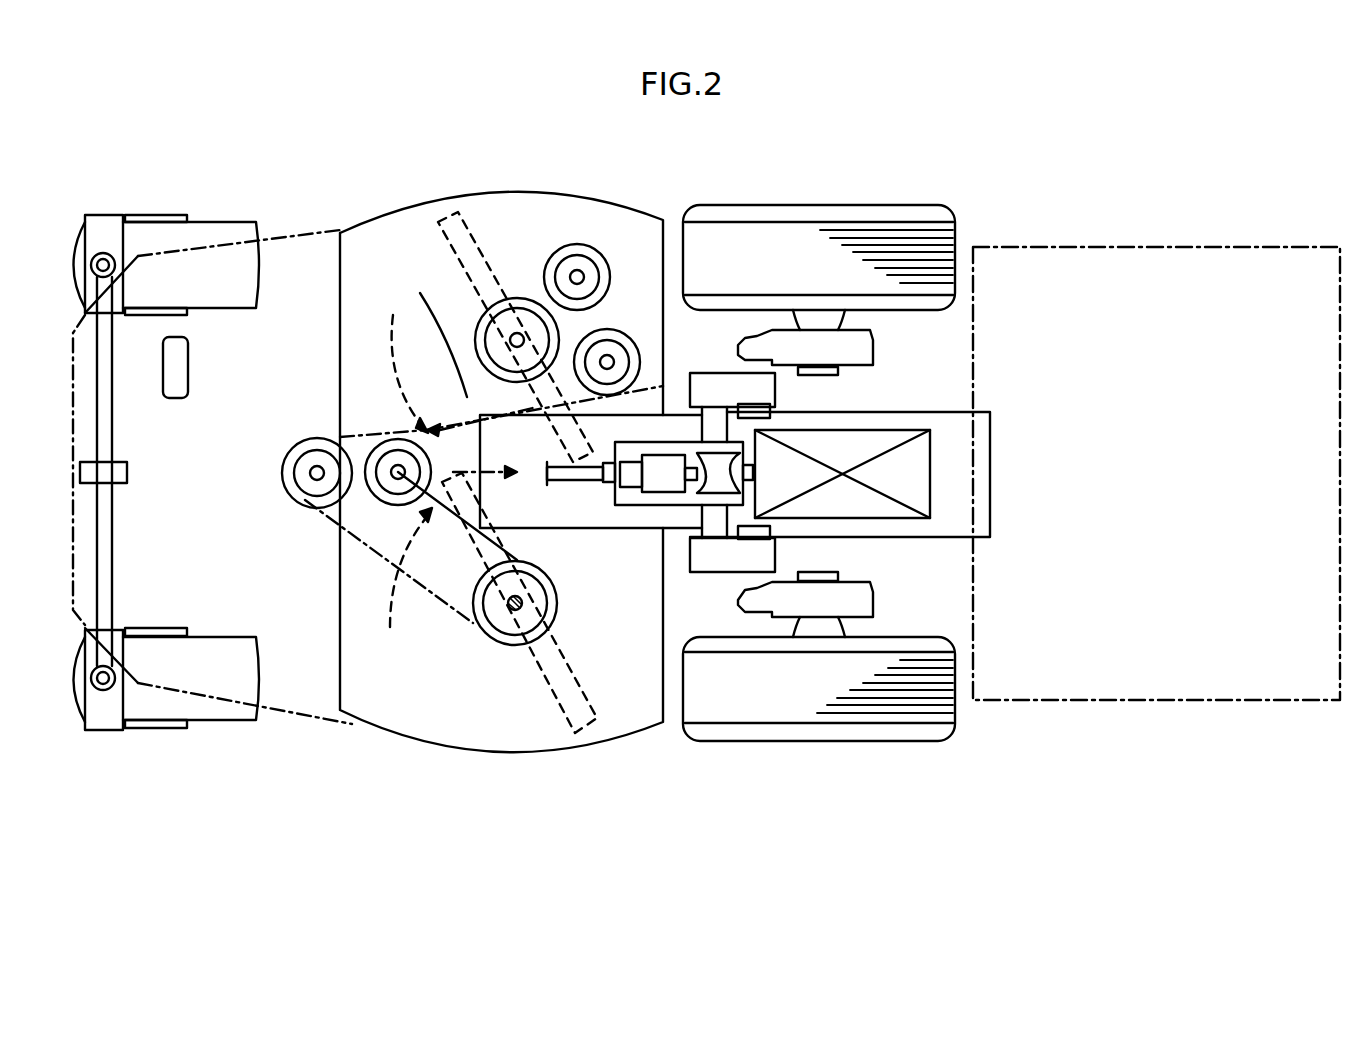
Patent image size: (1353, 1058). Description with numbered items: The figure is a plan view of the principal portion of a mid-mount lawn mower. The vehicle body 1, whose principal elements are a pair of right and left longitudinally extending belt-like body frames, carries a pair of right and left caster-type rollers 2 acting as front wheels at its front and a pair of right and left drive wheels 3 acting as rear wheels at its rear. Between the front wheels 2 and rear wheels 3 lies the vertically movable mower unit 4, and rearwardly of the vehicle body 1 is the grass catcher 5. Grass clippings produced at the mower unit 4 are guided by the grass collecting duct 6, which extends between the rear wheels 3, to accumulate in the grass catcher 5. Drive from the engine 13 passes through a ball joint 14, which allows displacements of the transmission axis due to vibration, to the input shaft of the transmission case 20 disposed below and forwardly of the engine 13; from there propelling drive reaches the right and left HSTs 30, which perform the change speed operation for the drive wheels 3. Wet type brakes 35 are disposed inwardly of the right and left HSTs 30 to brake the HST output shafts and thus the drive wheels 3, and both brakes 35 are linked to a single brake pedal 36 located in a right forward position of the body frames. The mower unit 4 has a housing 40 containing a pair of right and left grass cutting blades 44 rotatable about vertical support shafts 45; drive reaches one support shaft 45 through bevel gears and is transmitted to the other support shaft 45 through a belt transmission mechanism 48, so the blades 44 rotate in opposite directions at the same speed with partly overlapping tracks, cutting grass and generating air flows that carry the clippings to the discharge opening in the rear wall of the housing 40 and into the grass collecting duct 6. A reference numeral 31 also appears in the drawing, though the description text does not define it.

The vehicle body 1 is at (296, 716).
The caster-type rollers 2 is at (210, 220).
The drive wheels 3 is at (812, 215).
The mower unit 4 is at (501, 536).
The grass catcher 5 is at (1160, 255).
The grass collecting duct 6 is at (950, 410).
The engine 13 is at (912, 475).
The ball joint 14 is at (722, 467).
The transmission case 20 is at (615, 505).
The HSTs (hydrostatic stepless transmissions) 30 is at (708, 375).
The bearing bracket 31 is at (845, 345).
The wet type brakes 35 is at (758, 412).
The brake pedal 36 is at (183, 367).
The housing 40 is at (507, 713).
The grass cutting blades 44 is at (440, 200).
The support shafts 45 is at (517, 338).
The belt transmission mechanism 48 is at (452, 446).